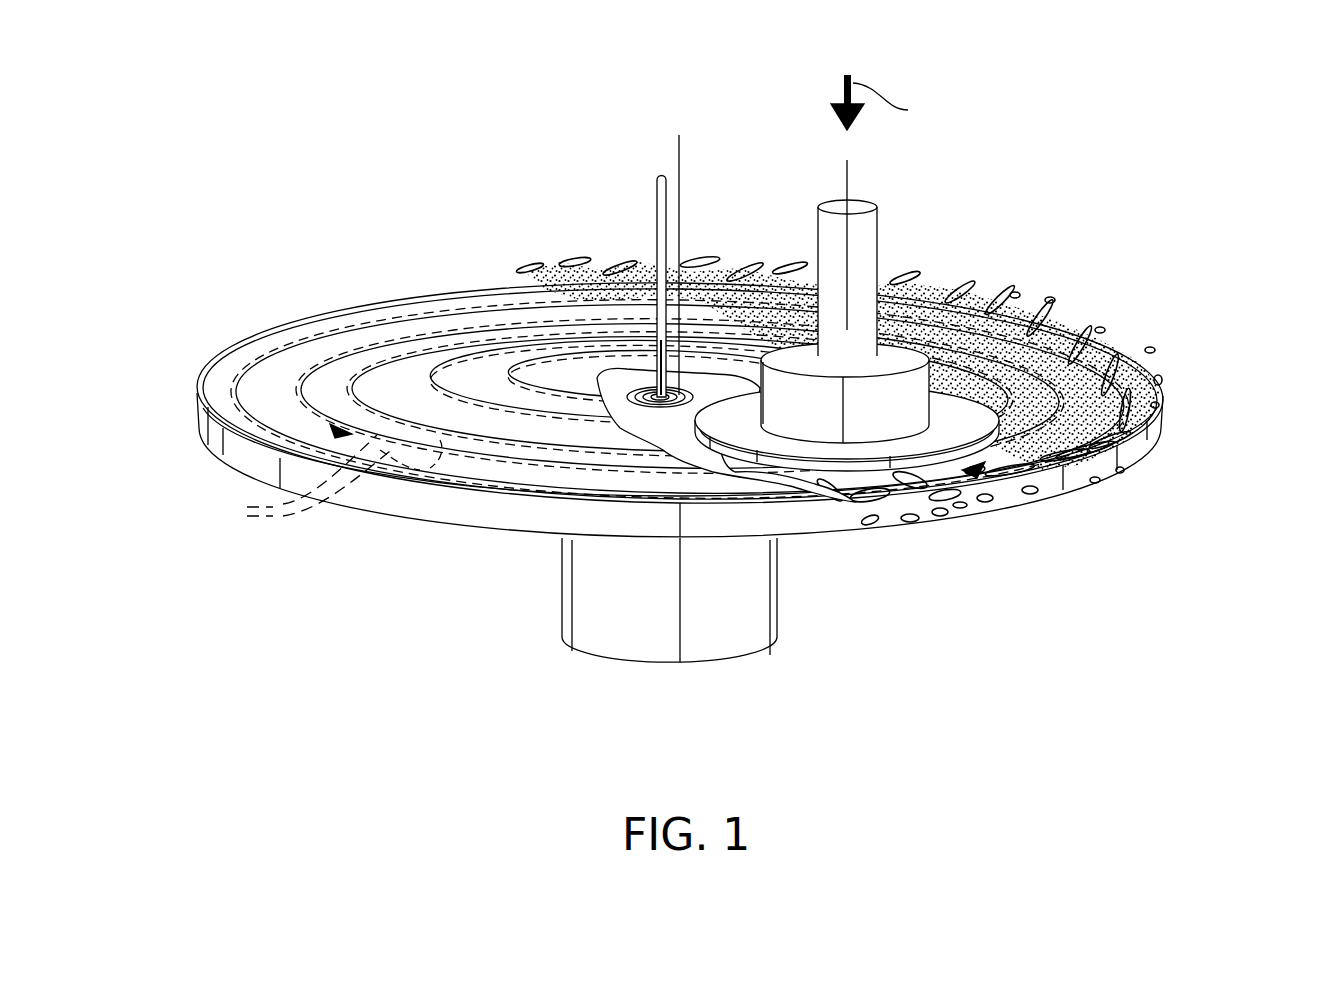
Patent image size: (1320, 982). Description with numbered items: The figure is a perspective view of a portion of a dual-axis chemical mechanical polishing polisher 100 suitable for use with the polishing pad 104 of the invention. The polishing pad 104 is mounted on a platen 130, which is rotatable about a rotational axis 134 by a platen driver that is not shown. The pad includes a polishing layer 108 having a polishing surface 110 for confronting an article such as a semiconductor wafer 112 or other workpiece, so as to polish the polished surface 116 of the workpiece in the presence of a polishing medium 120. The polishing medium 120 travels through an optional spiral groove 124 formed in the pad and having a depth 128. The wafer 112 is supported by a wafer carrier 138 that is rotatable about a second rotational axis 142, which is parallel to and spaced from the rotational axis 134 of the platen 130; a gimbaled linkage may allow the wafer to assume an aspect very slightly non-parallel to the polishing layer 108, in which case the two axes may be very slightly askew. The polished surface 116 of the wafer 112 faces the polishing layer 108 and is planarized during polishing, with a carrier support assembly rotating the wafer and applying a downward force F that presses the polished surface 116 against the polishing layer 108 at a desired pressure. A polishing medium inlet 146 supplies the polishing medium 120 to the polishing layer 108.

The dual-axis chemical mechanical polishing polisher 100 is at (1130, 211).
The polishing pad 104 is at (446, 285).
The polishing layer 108 is at (508, 284).
The polishing surface 110 is at (425, 397).
The semiconductor wafer 112 is at (966, 470).
The polished surface 116 is at (1120, 462).
The polishing medium 120 is at (600, 438).
The spiral groove 124 is at (393, 300).
The depth 128 is at (313, 483).
The platen 130 is at (456, 530).
The rotational axis 134 is at (677, 157).
The wafer carrier 138 is at (1010, 333).
The rotational axis 142 is at (855, 175).
The polishing medium inlet 146 is at (657, 243).